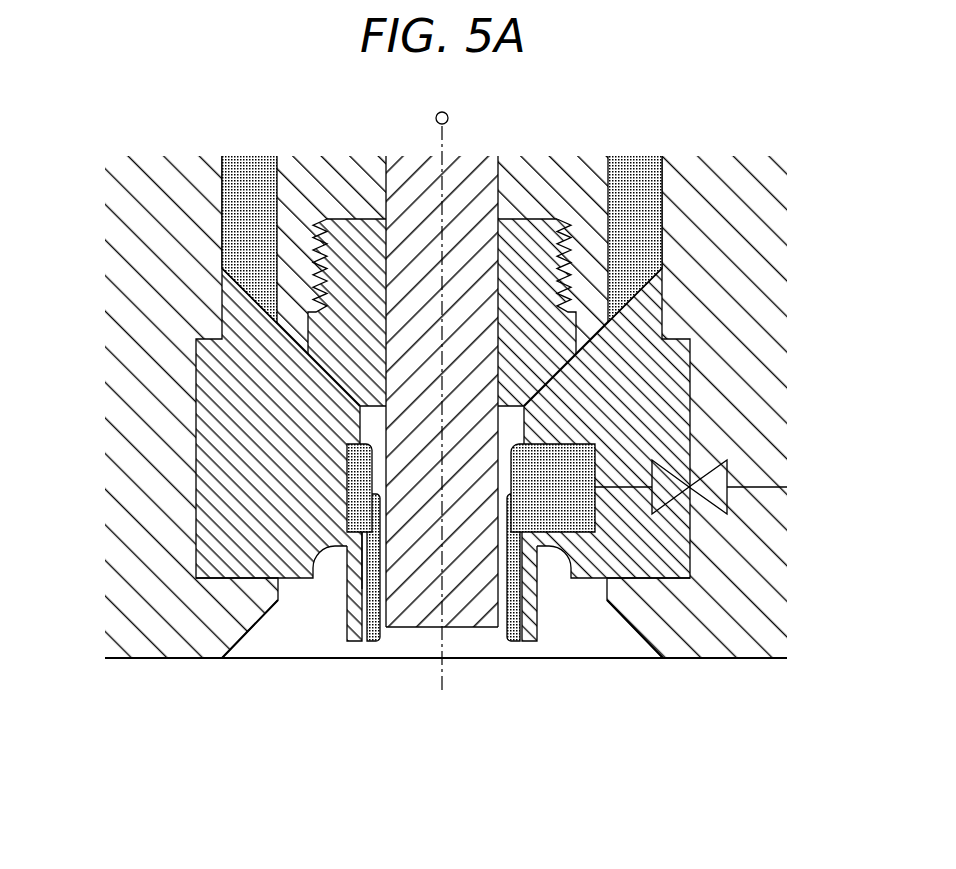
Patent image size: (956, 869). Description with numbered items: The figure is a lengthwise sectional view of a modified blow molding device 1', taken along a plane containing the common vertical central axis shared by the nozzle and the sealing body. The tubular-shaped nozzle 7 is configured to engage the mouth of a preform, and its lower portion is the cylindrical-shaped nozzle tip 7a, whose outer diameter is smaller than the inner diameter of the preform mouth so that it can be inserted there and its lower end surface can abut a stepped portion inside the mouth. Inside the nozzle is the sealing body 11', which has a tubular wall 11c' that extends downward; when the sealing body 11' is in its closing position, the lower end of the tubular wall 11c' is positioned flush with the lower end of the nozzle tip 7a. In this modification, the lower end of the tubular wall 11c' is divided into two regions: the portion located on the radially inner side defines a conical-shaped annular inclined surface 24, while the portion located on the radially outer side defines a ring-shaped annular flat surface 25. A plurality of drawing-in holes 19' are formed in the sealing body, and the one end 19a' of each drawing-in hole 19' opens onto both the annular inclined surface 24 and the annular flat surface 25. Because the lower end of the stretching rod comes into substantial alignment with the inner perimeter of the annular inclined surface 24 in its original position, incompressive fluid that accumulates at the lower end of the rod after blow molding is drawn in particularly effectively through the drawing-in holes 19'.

The blow molding device 1' is at (446, 469).
The nozzle 7 is at (692, 382).
The nozzle tip 7a is at (348, 612).
The sealing body 11' is at (357, 239).
The tubular wall 11c' is at (293, 613).
The drawing-in holes 19' is at (436, 405).
The one end of drawing-in hole 19a' is at (423, 688).
The annular inclined surface 24 is at (377, 641).
The annular flat surface 25 is at (363, 642).